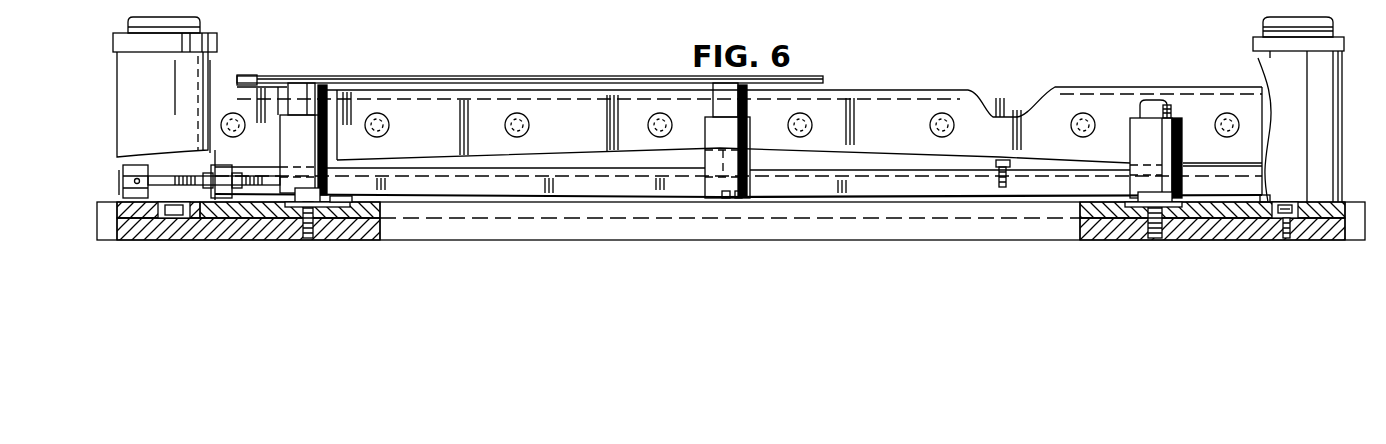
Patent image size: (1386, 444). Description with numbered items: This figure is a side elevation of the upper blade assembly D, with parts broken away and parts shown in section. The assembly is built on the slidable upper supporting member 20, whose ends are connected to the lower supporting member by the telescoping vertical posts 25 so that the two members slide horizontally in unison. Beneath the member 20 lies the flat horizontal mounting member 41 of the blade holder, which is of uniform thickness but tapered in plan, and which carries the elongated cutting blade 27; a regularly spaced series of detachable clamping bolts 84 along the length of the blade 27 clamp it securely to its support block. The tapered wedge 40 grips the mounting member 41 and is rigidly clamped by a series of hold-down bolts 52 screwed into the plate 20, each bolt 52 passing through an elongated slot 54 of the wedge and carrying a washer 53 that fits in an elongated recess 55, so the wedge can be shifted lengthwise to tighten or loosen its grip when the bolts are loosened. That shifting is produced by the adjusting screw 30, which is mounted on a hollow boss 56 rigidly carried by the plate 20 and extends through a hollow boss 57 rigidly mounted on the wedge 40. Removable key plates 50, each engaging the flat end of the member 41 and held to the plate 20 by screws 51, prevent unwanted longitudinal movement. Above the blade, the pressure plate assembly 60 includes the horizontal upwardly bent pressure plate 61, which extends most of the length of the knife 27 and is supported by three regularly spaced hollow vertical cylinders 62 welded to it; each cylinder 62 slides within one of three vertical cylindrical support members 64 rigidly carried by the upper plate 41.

The upper supporting member 20 is at (200, 230).
The telescoping vertical post 25 is at (132, 78).
The cutting blade 27 is at (870, 100).
The adjusting screw 30 is at (185, 176).
The tapered wedge 40 is at (358, 225).
The mounting member 41 is at (1280, 200).
The key plate 50 is at (172, 217).
The screw 51 is at (1288, 240).
The hold-down bolt 52 is at (307, 210).
The washer 53 is at (1142, 200).
The elongated slot 54 is at (326, 210).
The elongated recess 55 is at (340, 202).
The hollow boss 56 is at (133, 165).
The hollow boss 57 is at (222, 172).
The pressure plate assembly 60 is at (580, 76).
The pressure plate 61 is at (398, 76).
The hollow vertical cylinder 62 is at (303, 93).
The vertical cylindrical support member 64 is at (323, 152).
The clamping bolt 84 is at (390, 128).
The upper blade assembly D is at (1082, 70).